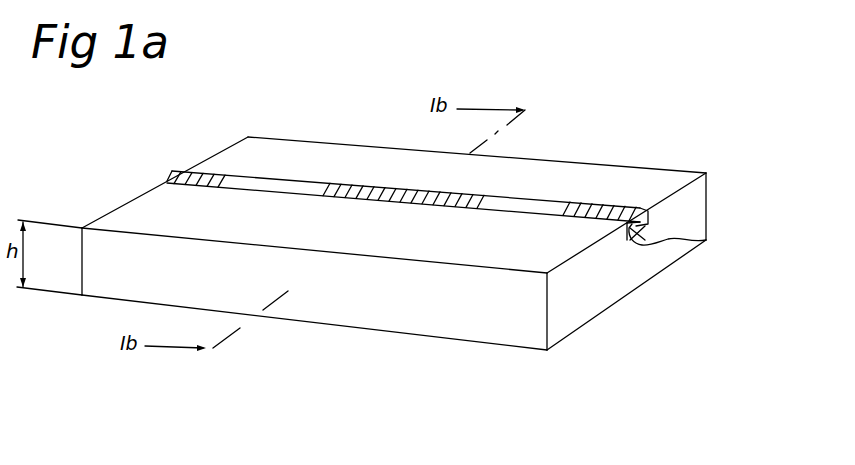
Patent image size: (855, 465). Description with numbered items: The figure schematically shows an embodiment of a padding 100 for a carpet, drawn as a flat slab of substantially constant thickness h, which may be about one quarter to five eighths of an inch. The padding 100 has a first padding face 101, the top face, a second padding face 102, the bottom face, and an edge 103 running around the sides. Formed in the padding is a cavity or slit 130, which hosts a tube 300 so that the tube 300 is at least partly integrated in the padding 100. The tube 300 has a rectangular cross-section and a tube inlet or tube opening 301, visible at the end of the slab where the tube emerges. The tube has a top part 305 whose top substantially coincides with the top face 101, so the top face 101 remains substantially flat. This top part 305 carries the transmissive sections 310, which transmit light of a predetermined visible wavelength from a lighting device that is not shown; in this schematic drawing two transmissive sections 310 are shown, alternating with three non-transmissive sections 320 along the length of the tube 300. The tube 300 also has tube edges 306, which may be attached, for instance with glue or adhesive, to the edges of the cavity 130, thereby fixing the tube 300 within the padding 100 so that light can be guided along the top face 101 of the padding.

The padding 100 is at (218, 129).
The first padding face 101 is at (658, 187).
The second padding face 102 is at (531, 355).
The edge 103 is at (420, 300).
The cavity or slit 130 is at (168, 181).
The tube 300 is at (687, 186).
The tube inlet or tube opening 301 is at (638, 230).
The top part 305 is at (313, 190).
The tube edge 306 is at (698, 248).
The transmissive section 310 is at (275, 185).
The non-transmissive section 320 is at (216, 183).